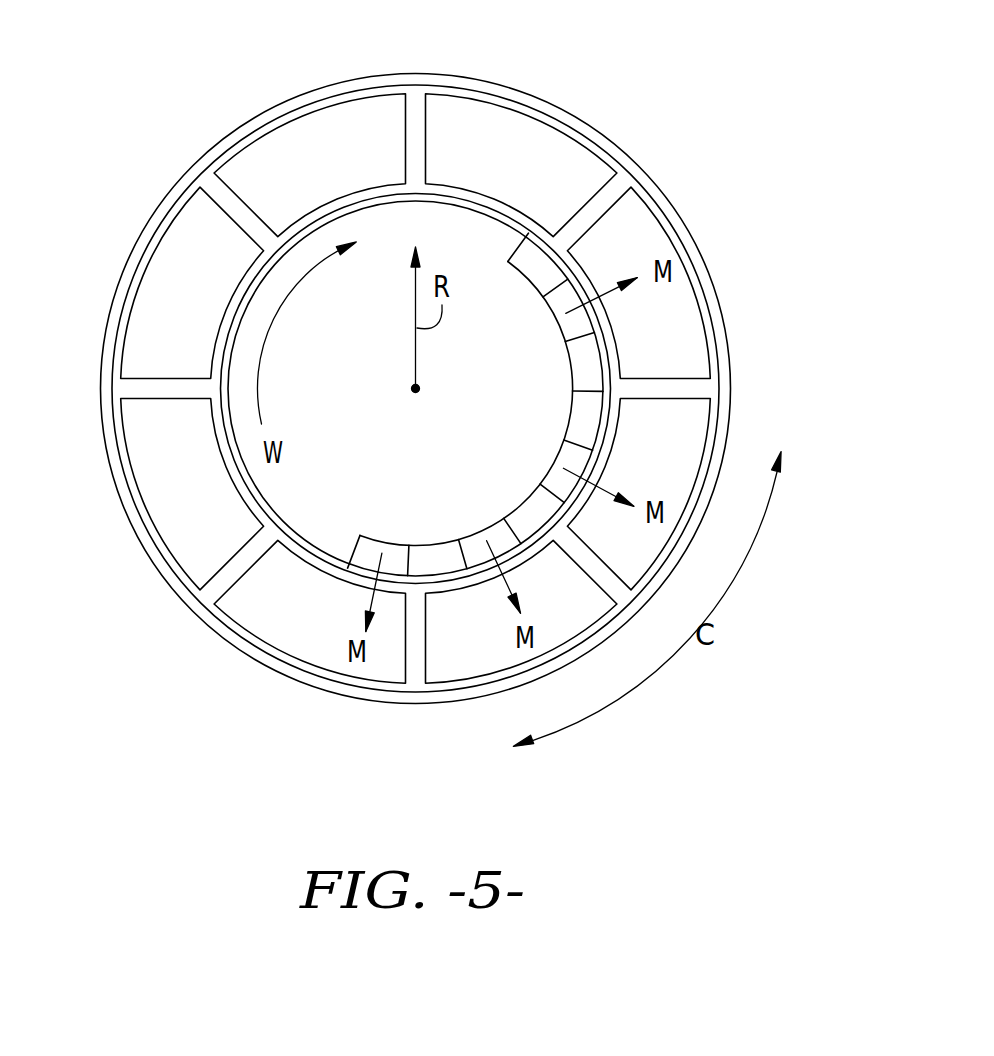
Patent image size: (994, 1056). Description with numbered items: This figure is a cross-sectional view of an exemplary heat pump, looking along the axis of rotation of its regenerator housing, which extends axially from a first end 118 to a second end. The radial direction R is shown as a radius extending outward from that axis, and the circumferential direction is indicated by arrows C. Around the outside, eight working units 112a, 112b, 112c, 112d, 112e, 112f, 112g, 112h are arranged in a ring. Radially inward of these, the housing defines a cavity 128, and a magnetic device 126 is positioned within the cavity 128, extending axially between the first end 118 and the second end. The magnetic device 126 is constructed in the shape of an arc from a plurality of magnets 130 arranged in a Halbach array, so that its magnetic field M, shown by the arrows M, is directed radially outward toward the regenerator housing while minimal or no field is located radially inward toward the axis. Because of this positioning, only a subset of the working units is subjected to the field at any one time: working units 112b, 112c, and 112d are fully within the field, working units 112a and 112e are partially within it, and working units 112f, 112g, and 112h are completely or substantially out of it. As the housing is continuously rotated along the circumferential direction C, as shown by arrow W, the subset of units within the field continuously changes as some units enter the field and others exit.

The first end 118 is at (678, 125).
The working unit 112a is at (490, 138).
The working unit 112b is at (670, 312).
The working unit 112c is at (673, 427).
The working unit 112d is at (468, 650).
The working unit 112e is at (280, 612).
The working unit 112f is at (157, 453).
The working unit 112g is at (185, 248).
The working unit 112h is at (330, 137).
The magnetic device 126 is at (400, 556).
The cavity 128 is at (313, 492).
The magnets 130 is at (548, 273).